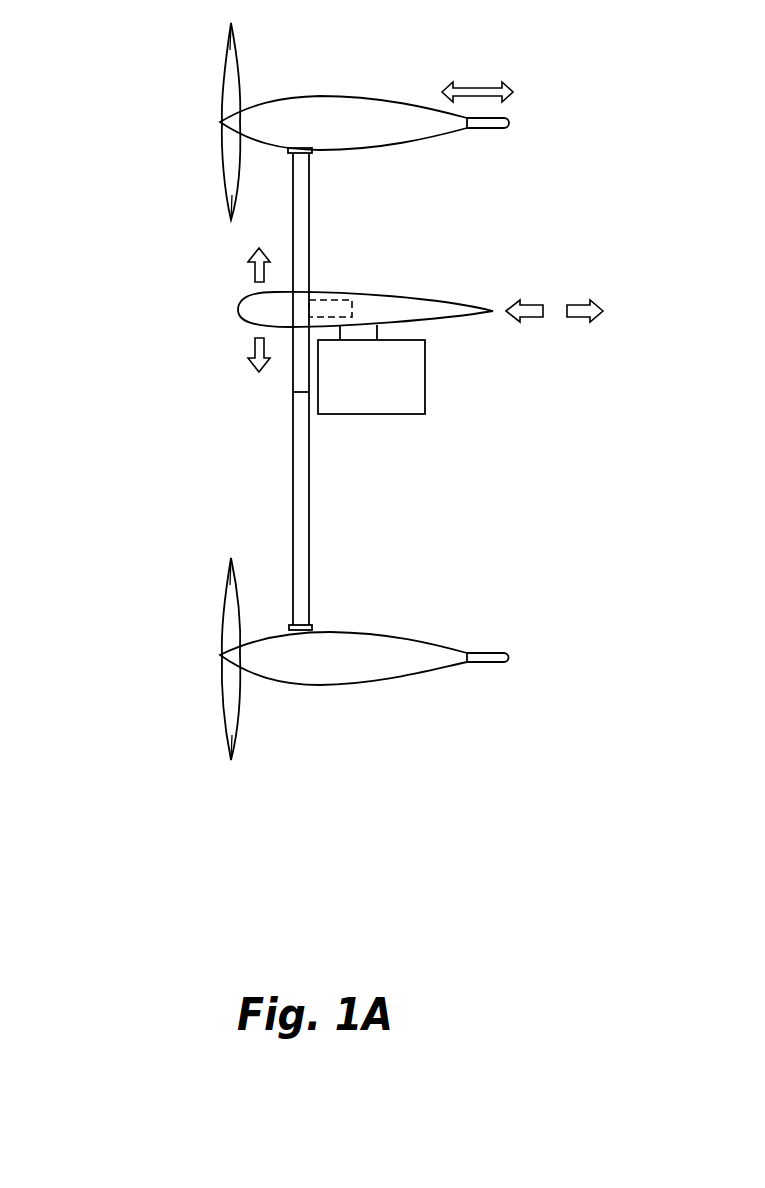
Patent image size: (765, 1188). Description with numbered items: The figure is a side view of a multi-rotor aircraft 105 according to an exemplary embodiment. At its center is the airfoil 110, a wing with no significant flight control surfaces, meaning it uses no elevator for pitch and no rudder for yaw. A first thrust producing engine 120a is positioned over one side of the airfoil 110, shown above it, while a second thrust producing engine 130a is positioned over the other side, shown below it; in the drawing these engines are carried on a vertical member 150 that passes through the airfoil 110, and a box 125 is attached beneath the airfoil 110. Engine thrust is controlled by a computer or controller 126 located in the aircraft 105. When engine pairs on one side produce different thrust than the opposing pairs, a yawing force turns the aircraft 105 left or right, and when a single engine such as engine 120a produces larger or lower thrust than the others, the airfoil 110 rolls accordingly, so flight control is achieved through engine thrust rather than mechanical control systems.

The multi-rotor aircraft 105 is at (114, 111).
The thrust producing engine 120a is at (322, 105).
The strut 150 is at (293, 242).
The airfoil 110 is at (387, 305).
The controller 126 is at (310, 311).
The payload / controller box 125 is at (413, 387).
The thrust producing engine 130a is at (353, 665).